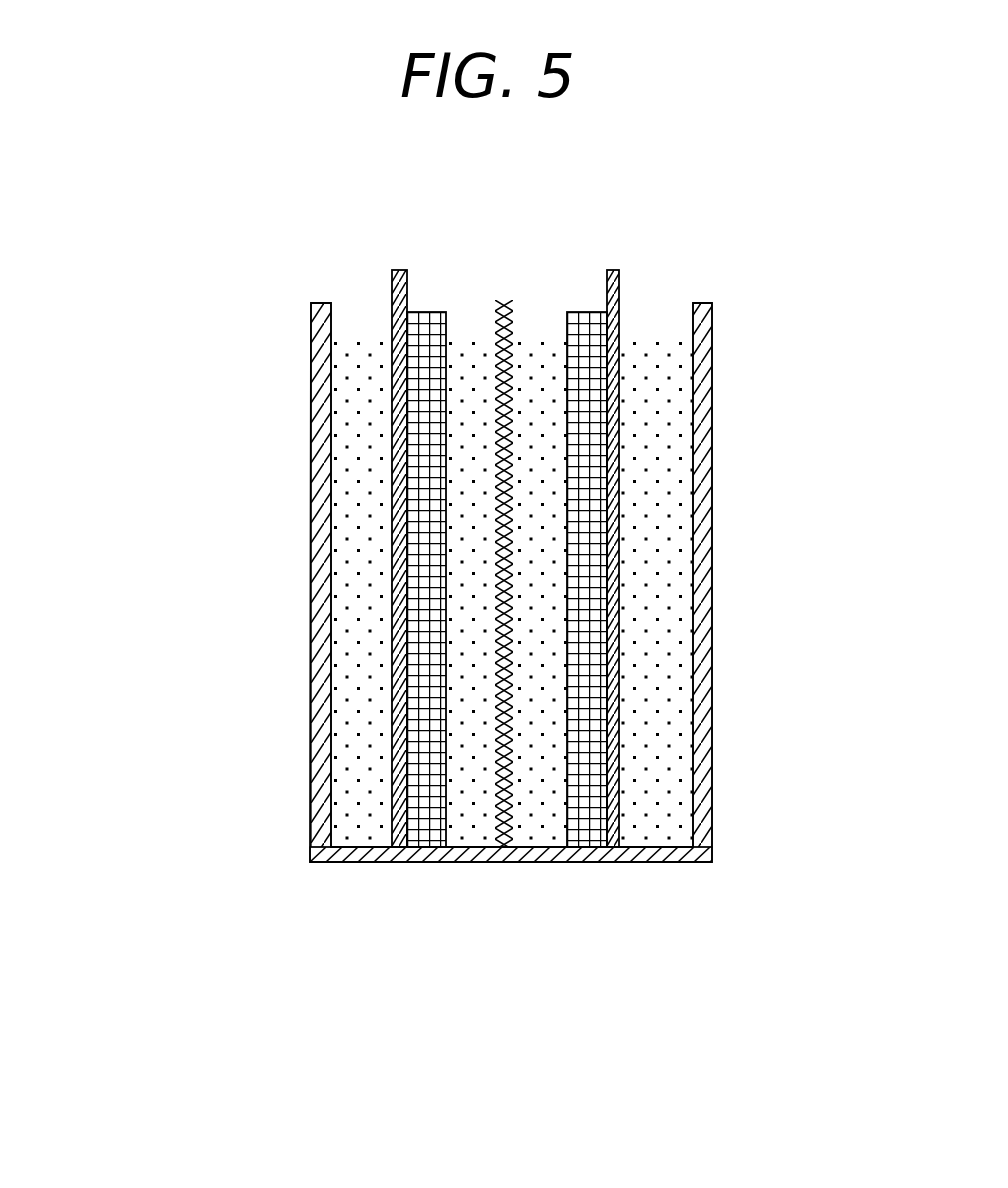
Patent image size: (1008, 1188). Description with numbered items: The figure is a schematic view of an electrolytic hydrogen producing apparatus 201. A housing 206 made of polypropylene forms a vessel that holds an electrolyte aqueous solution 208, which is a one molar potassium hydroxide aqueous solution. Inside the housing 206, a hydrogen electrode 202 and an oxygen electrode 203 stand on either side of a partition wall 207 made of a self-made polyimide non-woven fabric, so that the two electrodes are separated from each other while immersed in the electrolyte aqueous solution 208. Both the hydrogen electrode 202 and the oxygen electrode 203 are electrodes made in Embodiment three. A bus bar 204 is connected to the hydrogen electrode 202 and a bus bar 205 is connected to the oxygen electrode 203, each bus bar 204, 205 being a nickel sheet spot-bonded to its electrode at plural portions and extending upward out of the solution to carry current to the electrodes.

The electrolytic hydrogen producing apparatus 201 is at (153, 240).
The hydrogen electrode 202 is at (420, 763).
The oxygen electrode 203 is at (601, 752).
The bus bar 204 is at (400, 270).
The bus bar 205 is at (613, 270).
The housing 206 is at (629, 850).
The partition wall 207 is at (510, 300).
The electrolyte aqueous solution 208 is at (533, 827).